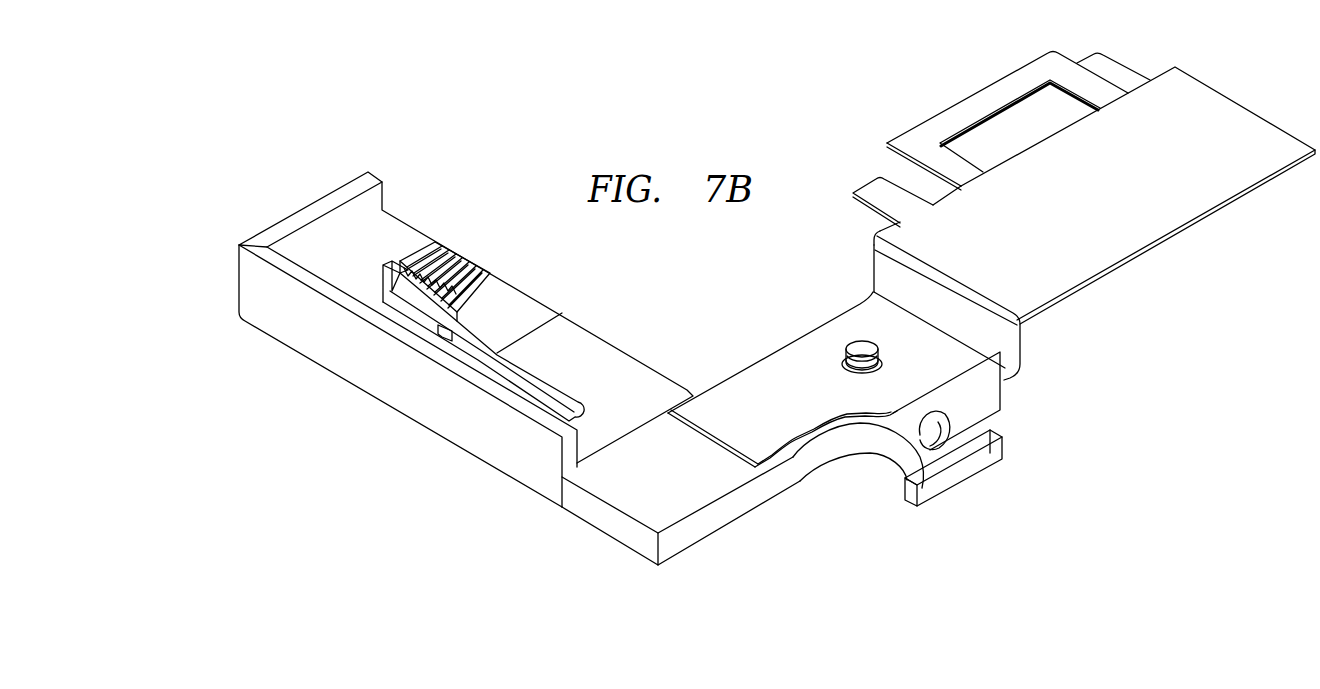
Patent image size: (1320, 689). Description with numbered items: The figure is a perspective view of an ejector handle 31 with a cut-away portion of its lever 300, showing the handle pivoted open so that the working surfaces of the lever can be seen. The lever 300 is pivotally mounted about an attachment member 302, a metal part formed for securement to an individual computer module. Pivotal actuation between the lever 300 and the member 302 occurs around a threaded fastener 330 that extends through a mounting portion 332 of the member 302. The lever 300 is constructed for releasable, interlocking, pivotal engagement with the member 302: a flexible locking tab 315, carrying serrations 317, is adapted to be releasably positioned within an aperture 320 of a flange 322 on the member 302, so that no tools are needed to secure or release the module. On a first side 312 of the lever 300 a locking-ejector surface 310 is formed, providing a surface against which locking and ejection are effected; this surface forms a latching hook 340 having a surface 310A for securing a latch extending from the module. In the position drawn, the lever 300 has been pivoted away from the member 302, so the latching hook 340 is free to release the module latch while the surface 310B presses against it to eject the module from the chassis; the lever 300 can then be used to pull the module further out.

The lever 300 is at (364, 382).
The ejector handle 31 is at (497, 319).
The flexible locking tab 315 is at (515, 300).
The serrations 317 is at (470, 266).
The mounting portion 332 is at (748, 376).
The threaded fastener 330 is at (862, 342).
The locking-ejector surface 310 is at (781, 462).
The first side 312 is at (830, 488).
The surface 310A is at (908, 497).
The surface 310B is at (693, 535).
The latching hook 340 is at (962, 480).
The flange 322 is at (933, 125).
The aperture 320 is at (1013, 113).
The attachment member 302 is at (1233, 108).